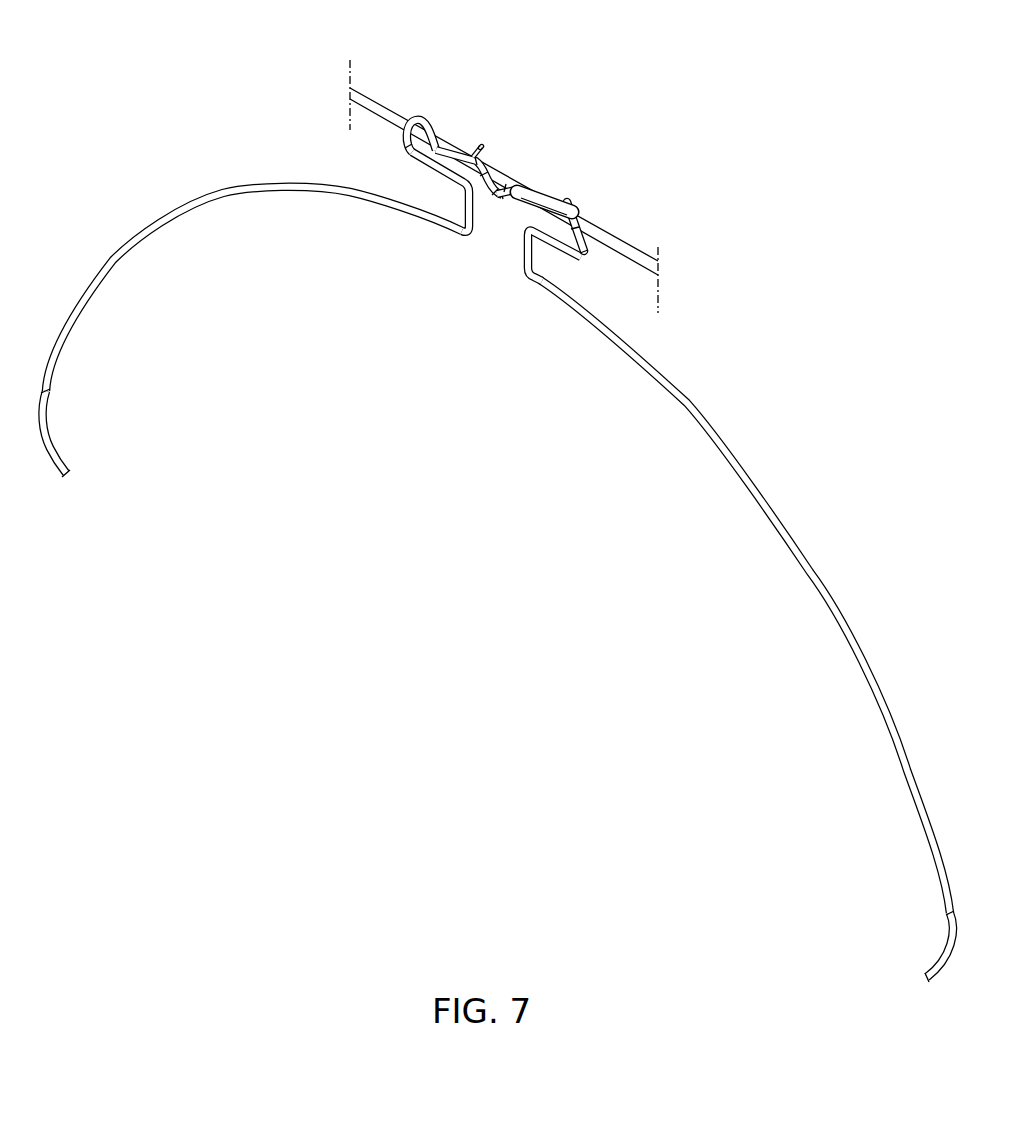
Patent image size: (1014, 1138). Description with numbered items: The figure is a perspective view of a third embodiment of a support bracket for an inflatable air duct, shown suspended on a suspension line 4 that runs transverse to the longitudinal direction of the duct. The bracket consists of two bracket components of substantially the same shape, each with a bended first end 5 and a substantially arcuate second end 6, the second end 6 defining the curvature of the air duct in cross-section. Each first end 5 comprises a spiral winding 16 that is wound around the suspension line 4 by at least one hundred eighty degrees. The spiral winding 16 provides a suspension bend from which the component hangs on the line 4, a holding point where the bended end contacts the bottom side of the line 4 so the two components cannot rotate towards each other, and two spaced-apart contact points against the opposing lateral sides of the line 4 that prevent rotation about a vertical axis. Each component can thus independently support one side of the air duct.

The suspension line 4 is at (634, 250).
The first end 5 is at (436, 183).
The second end 6 is at (496, 535).
The spiral winding 16 is at (417, 118).